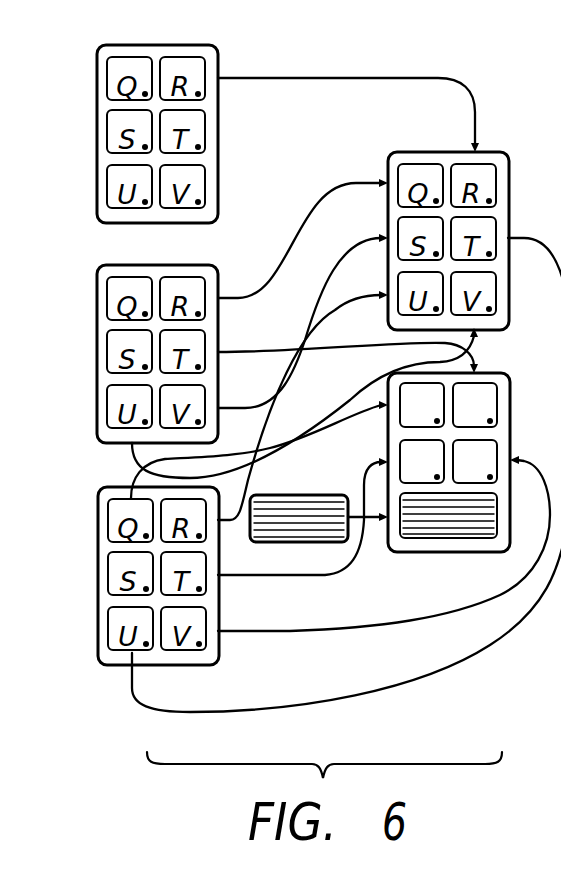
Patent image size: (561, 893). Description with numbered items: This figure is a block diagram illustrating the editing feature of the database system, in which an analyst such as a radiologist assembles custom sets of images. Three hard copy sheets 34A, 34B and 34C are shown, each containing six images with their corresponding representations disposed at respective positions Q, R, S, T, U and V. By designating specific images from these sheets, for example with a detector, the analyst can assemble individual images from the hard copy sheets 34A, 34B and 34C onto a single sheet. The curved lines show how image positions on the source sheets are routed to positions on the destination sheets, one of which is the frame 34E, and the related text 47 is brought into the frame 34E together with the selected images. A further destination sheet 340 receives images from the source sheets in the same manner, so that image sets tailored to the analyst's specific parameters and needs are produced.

The hard copy sheet 34A is at (97, 83).
The hard copy sheet 34B is at (97, 303).
The hard copy sheet 34C is at (98, 526).
The first destination register bank 340 is at (388, 170).
The frame 34E is at (510, 392).
The related text 47 is at (403, 552).